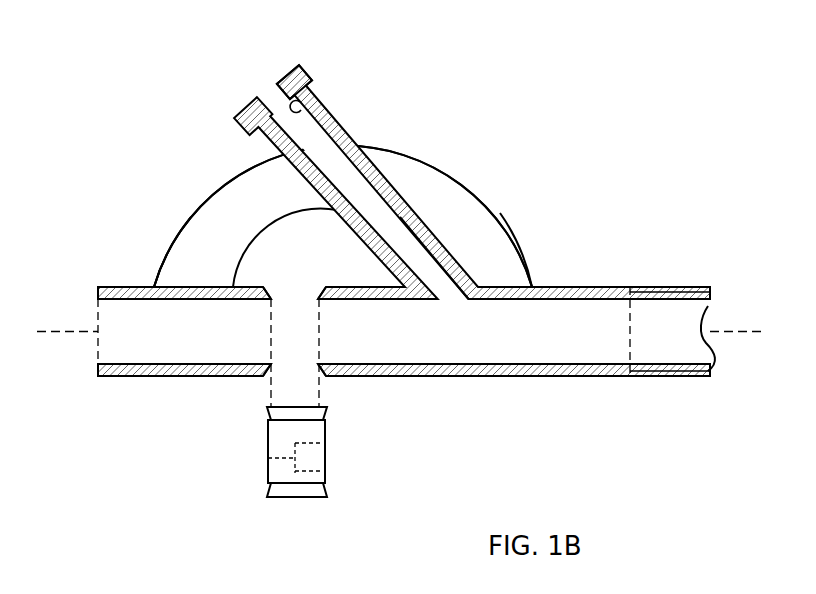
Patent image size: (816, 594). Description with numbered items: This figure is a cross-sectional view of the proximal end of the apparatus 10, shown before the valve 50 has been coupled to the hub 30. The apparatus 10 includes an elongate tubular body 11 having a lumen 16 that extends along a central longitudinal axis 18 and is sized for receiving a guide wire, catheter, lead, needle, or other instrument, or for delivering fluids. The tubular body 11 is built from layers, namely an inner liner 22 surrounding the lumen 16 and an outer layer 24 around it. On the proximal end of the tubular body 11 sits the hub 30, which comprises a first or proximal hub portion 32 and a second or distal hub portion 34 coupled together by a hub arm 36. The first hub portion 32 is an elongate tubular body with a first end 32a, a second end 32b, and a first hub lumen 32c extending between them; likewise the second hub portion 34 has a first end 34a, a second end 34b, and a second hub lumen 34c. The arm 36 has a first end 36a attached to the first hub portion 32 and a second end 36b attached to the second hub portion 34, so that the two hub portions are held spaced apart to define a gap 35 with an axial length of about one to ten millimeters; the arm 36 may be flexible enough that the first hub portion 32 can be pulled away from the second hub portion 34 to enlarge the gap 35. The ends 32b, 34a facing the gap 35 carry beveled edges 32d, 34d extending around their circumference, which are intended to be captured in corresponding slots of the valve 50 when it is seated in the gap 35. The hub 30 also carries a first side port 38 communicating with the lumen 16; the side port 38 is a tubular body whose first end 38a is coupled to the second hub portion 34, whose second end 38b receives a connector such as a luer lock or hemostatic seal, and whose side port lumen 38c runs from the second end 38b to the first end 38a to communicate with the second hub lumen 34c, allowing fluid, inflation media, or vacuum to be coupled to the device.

The apparatus 10 is at (611, 148).
The elongate tubular body 11 is at (680, 386).
The lumen 16 is at (707, 310).
The central longitudinal axis 18 is at (72, 334).
The inner liner 22 is at (648, 377).
The outer layer 24 is at (675, 287).
The hub 30 is at (441, 164).
The first hub portion 32 is at (176, 377).
The first end of first hub portion 32a is at (106, 377).
The second end of first hub portion 32b is at (264, 378).
The first hub lumen 32c is at (99, 308).
The beveled edge 32d is at (285, 247).
The second hub portion 34 is at (470, 377).
The first end of second hub portion 34a is at (337, 378).
The second end of second hub portion 34b is at (602, 287).
The second hub lumen 34c is at (553, 358).
The beveled edge 34d is at (365, 264).
The gap 35 is at (295, 353).
The hub arm 36 is at (210, 193).
The first end of arm 36a is at (153, 275).
The second end of arm 36b is at (529, 278).
The first side port 38 is at (338, 122).
The first end of side port 38a is at (473, 274).
The second end of side port 38b is at (299, 65).
The side port lumen 38c is at (300, 101).
The valve 50 is at (257, 468).